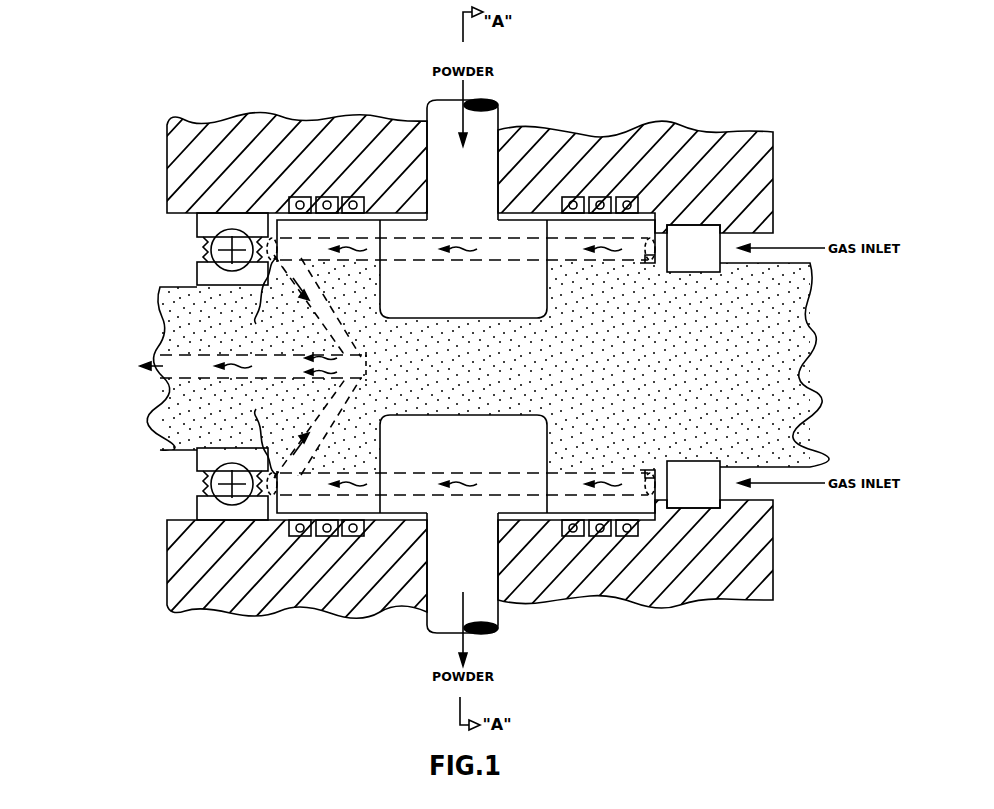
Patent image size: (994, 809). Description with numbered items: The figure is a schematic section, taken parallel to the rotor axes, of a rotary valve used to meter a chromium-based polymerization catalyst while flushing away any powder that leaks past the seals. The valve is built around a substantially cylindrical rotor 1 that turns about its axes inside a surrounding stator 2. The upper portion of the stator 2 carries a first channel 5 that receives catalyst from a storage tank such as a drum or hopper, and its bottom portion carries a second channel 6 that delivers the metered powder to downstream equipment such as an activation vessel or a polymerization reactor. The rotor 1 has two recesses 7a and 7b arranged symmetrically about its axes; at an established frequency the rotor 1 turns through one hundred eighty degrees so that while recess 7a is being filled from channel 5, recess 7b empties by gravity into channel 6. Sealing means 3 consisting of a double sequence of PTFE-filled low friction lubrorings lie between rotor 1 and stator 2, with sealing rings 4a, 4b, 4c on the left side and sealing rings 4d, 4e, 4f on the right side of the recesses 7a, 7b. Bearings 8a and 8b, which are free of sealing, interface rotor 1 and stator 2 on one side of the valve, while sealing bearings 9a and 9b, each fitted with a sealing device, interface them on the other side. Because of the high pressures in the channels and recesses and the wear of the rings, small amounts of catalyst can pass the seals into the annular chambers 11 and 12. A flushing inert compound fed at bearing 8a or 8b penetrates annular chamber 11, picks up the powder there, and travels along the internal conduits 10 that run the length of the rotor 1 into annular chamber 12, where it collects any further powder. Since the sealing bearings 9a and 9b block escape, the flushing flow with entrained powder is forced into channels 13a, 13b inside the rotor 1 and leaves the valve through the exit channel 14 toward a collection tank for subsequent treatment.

The rotor 1 is at (488, 366).
The stator 2 is at (470, 365).
The sealing means 3 is at (635, 185).
The sealing ring 4a is at (300, 195).
The sealing ring 4b is at (327, 195).
The sealing ring 4c is at (353, 195).
The sealing ring 4d is at (573, 195).
The sealing ring 4e is at (600, 195).
The sealing ring 4f is at (627, 195).
The first channel 5 is at (462, 150).
The second channel 6 is at (462, 589).
The recess 7a is at (463, 269).
The recess 7b is at (463, 464).
The bearing 8a is at (693, 248).
The bearing 8b is at (693, 484).
The sealing bearing 9a is at (200, 224).
The sealing bearing 9b is at (200, 506).
The internal conduit 10 is at (461, 366).
The annular chamber 11 is at (650, 263).
The annular chamber 12 is at (259, 366).
The channel 13a is at (317, 306).
The channel 13b is at (317, 428).
The exit channel 14 is at (196, 365).